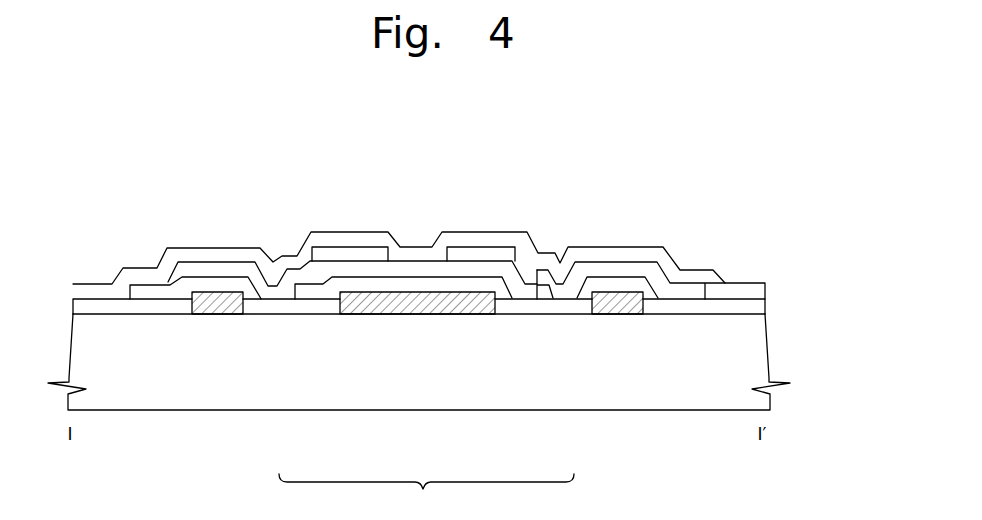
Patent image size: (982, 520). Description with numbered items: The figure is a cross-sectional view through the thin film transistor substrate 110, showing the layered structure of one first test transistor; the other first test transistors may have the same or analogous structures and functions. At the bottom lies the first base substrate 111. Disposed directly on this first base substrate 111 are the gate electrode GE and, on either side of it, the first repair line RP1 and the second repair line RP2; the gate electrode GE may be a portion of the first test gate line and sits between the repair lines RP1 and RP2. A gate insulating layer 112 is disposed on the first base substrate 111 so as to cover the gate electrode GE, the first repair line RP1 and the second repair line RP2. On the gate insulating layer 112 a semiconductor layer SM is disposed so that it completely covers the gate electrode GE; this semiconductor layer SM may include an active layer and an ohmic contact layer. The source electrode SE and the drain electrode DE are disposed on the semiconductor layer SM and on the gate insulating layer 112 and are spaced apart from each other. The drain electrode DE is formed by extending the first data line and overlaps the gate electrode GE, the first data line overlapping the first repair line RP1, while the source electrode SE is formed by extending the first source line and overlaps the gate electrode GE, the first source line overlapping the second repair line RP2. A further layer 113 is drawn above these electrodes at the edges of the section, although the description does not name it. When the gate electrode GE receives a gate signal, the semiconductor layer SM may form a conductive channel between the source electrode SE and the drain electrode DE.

The thin film transistor substrate 110 is at (660, 218).
The first base substrate 111 is at (750, 352).
The gate insulating layer 112 is at (750, 306).
The insulating layer 113 is at (750, 292).
The first repair line RP1 is at (613, 305).
The second repair line RP2 is at (215, 306).
The source electrode SE is at (272, 298).
The semiconductor layer SM is at (372, 274).
The gate electrode GE is at (442, 305).
The drain electrode DE is at (548, 297).